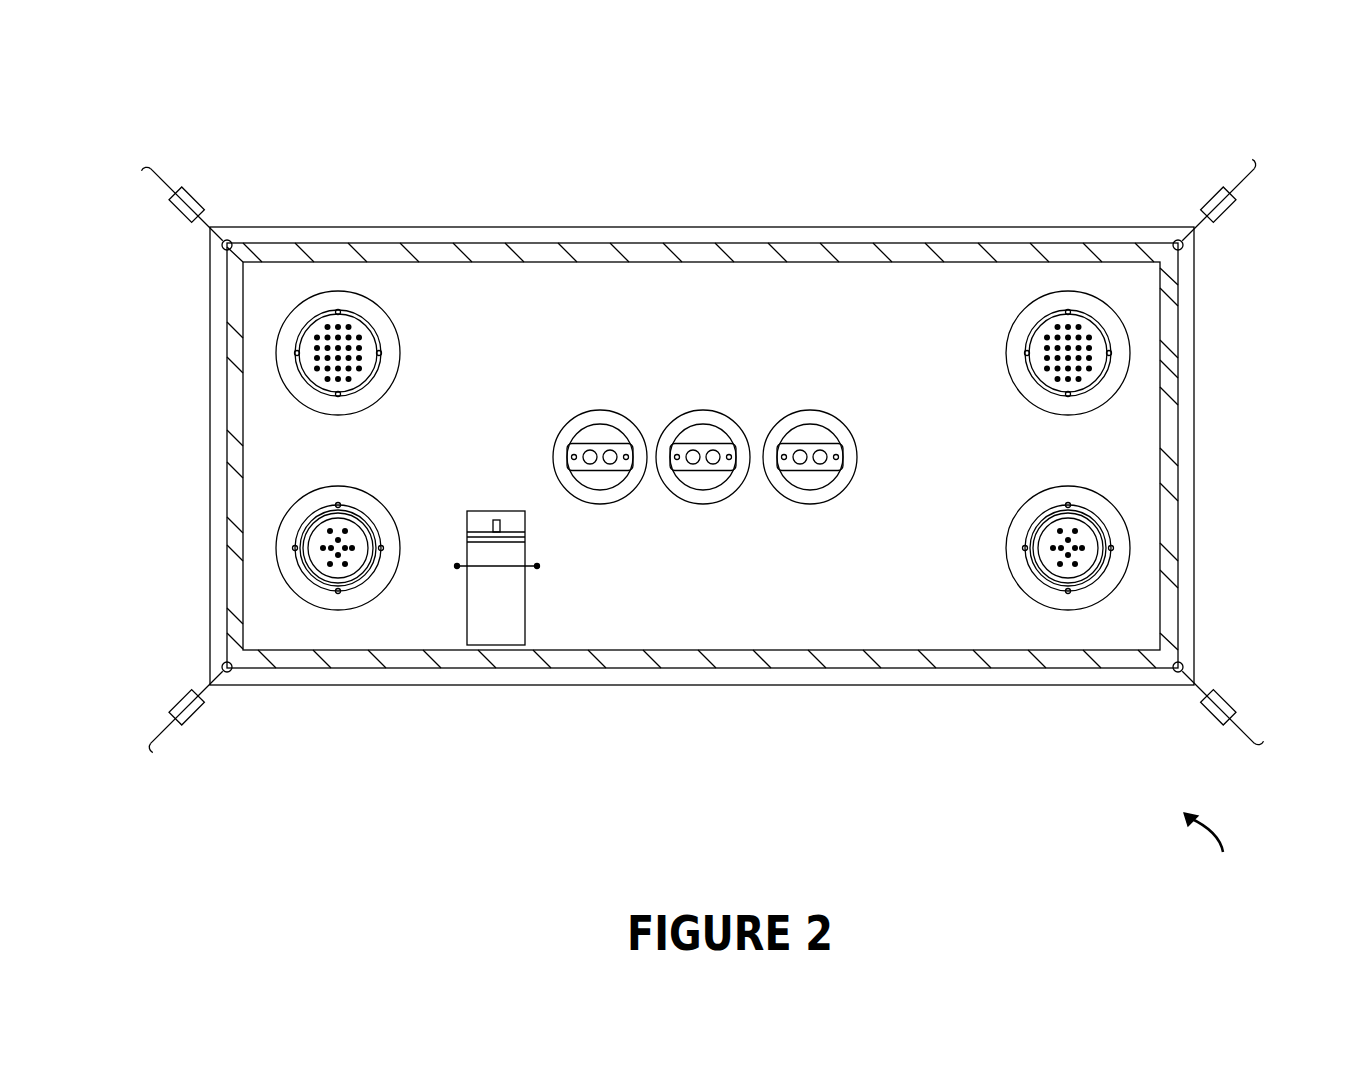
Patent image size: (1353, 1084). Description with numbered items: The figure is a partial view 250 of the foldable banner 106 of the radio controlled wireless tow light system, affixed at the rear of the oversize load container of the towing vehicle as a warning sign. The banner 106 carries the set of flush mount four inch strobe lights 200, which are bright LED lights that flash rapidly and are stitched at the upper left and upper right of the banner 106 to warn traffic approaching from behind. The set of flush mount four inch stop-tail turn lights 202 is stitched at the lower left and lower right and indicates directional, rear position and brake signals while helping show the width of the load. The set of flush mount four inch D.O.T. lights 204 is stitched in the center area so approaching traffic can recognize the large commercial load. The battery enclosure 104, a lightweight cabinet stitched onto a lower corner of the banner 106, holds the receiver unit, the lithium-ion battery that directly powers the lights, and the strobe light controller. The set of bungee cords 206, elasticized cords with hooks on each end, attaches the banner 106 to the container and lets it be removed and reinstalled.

The battery enclosure 104 is at (500, 633).
The foldable banner 106 is at (560, 237).
The set of flush mount 4 inch strobe lights 200 is at (1030, 353).
The set of flush mount 4 inch stop-tail turn lights 202 is at (1030, 565).
The set of flush mount 4 inch D.O.T. lights 204 is at (857, 463).
The set of bungee cords 206 is at (187, 197).
The partial view 250 is at (1230, 860).